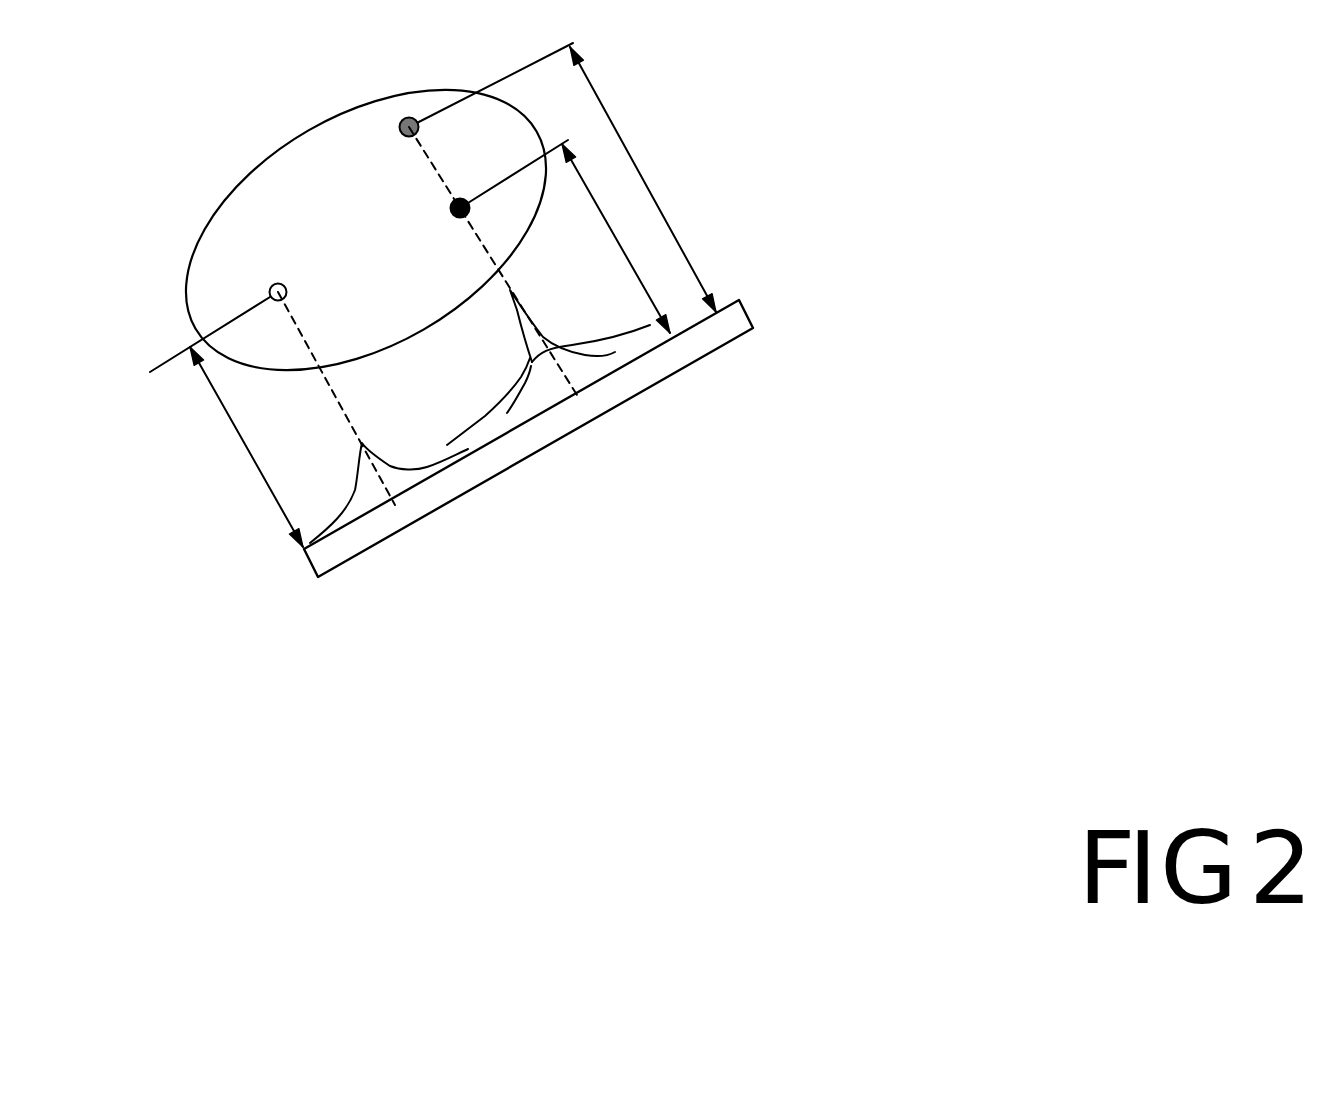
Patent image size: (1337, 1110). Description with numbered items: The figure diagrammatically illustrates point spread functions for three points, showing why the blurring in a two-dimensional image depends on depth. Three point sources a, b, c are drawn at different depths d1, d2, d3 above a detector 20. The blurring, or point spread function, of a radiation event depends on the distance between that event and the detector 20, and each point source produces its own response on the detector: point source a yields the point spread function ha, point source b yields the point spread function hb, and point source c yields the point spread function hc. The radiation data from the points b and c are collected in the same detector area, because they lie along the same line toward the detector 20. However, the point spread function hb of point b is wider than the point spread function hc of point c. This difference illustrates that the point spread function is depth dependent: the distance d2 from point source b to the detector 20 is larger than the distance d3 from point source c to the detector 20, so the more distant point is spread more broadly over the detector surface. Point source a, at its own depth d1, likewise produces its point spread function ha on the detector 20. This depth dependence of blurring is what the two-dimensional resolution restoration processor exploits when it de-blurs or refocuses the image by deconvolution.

The detector 20 is at (747, 312).
The point source a is at (275, 283).
The point source b is at (405, 115).
The point source c is at (457, 199).
The depth d1 is at (244, 447).
The distance d2 is at (643, 179).
The distance d3 is at (616, 238).
The point spread function ha is at (363, 442).
The point spread function hb is at (484, 418).
The point spread function hc is at (511, 289).